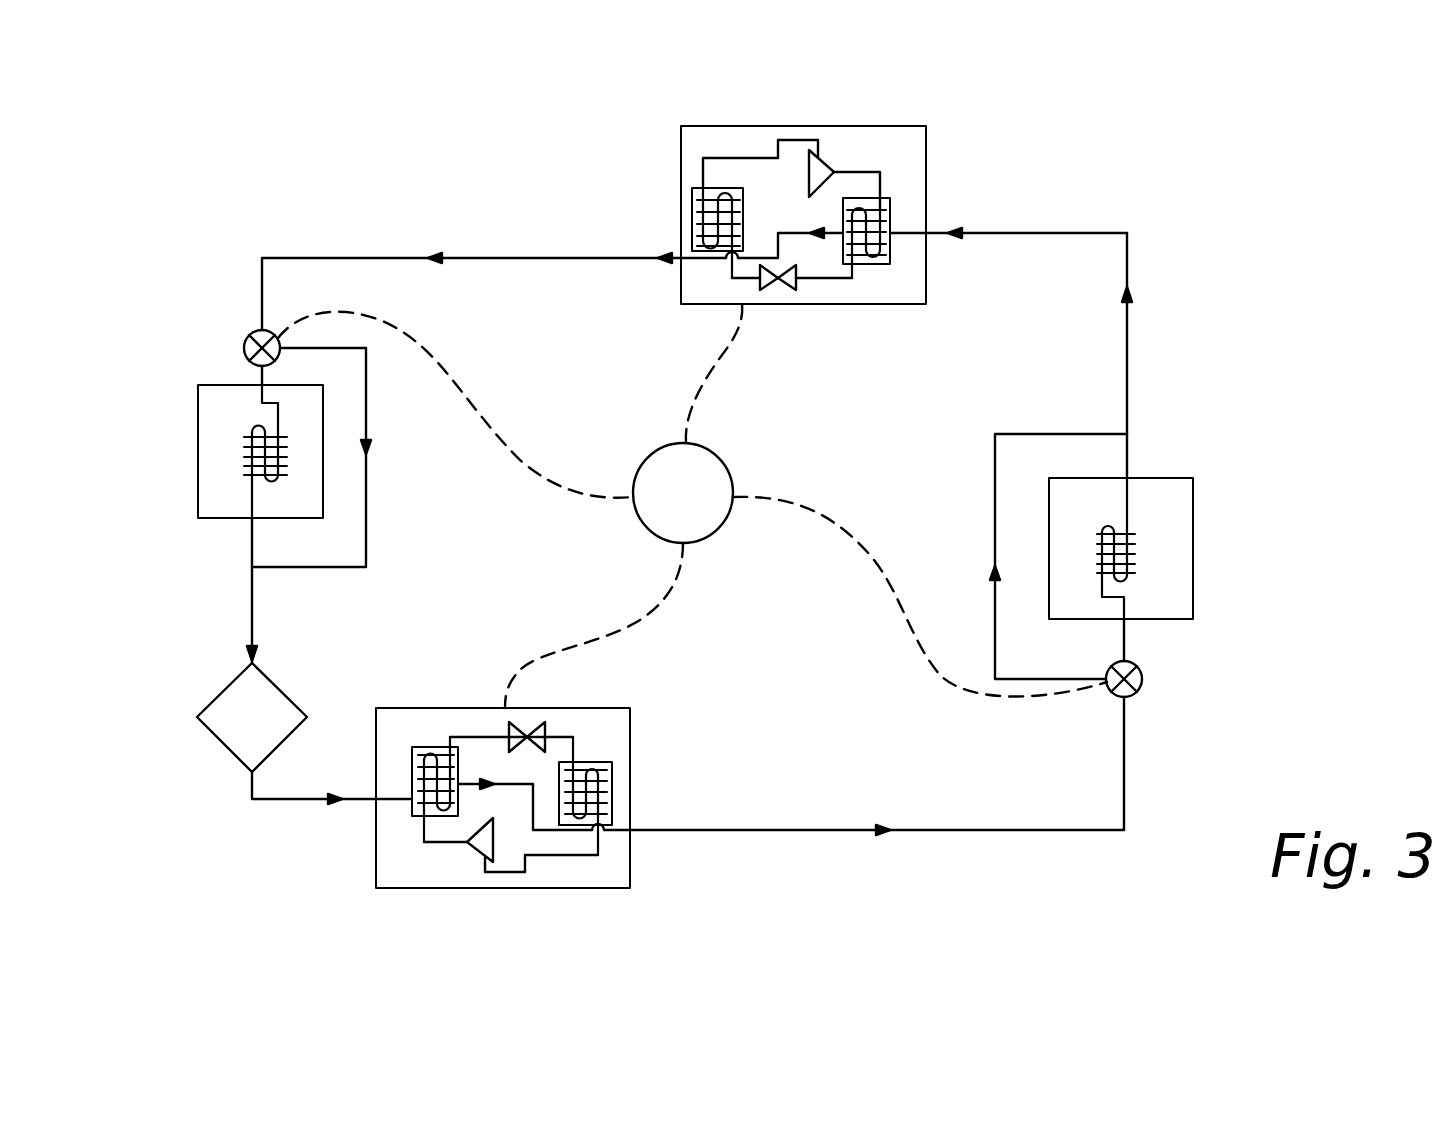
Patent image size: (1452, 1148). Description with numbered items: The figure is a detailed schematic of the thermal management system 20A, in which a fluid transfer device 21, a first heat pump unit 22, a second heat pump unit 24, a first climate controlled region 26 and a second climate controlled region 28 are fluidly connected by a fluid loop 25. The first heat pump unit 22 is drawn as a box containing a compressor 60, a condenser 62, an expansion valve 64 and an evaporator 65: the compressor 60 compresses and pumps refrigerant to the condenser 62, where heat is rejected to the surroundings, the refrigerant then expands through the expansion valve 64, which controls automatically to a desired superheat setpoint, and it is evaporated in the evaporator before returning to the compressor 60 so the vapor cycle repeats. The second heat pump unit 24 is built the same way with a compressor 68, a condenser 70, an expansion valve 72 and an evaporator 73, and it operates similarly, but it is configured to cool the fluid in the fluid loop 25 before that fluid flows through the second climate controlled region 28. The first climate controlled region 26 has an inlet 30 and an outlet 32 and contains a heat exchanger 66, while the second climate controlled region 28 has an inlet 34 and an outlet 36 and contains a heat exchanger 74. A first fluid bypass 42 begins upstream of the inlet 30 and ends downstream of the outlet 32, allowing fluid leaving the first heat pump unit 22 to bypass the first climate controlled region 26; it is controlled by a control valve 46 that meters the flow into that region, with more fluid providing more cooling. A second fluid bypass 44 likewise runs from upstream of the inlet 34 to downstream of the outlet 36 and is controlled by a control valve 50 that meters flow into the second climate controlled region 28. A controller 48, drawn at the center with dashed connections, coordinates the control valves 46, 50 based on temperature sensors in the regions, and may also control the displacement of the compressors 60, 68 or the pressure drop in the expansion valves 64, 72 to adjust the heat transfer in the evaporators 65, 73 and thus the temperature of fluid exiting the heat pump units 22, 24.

The thermal management system 20A is at (1124, 158).
The fluid transfer device 21 is at (304, 733).
The first heat pump unit 22 is at (577, 888).
The second heat pump unit 24 is at (799, 126).
The fluid loop 25 is at (1133, 764).
The first climate controlled region 26 is at (1193, 547).
The second climate controlled region 28 is at (198, 468).
The inlet 30 is at (1125, 622).
The outlet 32 is at (1128, 478).
The inlet 34 is at (258, 377).
The outlet 36 is at (251, 520).
The first fluid bypass 42 is at (978, 535).
The second fluid bypass 44 is at (380, 518).
The control valve 46 is at (1140, 678).
The controller 48 is at (692, 506).
The control valve 50 is at (243, 340).
The compressor 60 is at (475, 848).
The condenser 62 is at (580, 762).
The expansion valve 64 is at (531, 727).
The evaporator 65 is at (411, 808).
The heat exchanger 66 is at (1148, 530).
The compressor 68 is at (828, 163).
The condenser 70 is at (737, 188).
The expansion valve 72 is at (771, 289).
The evaporator 73 is at (866, 264).
The heat exchanger 74 is at (231, 478).